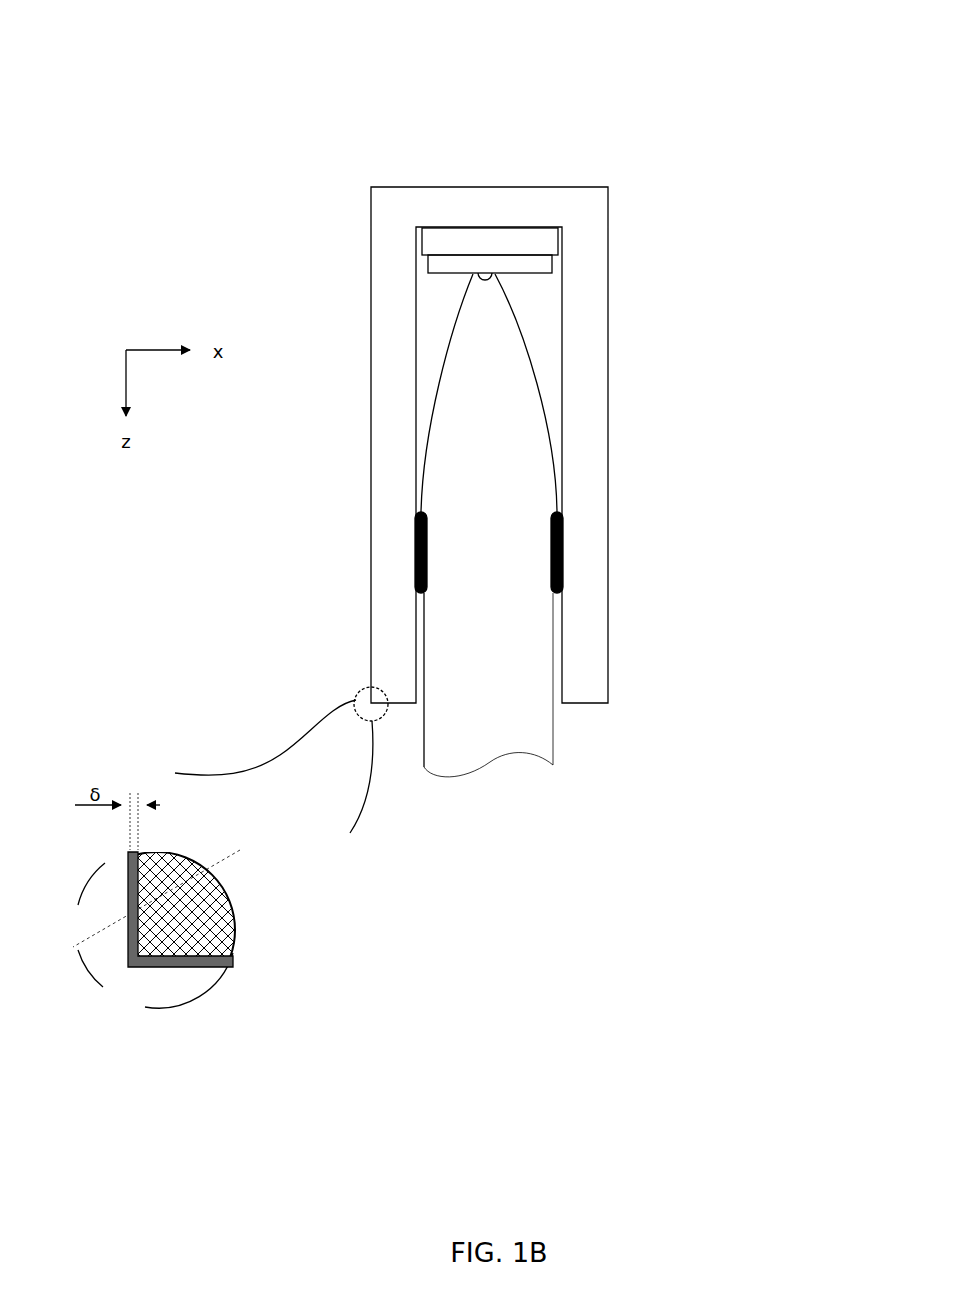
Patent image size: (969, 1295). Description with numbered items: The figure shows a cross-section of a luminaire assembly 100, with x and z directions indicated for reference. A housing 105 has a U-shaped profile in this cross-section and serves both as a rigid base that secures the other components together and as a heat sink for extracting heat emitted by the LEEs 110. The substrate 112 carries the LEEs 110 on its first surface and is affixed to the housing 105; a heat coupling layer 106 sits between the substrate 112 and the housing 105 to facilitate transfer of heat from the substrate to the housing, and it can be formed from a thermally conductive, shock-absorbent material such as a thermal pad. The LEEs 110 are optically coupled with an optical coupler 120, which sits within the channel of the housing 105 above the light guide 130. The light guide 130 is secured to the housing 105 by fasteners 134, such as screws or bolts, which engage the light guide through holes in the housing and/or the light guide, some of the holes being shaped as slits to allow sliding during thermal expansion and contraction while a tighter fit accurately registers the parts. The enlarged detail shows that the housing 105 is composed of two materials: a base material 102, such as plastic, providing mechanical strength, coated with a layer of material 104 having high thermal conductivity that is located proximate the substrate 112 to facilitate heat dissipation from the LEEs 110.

The luminaire assembly 100 is at (784, 47).
The base material 102 is at (190, 910).
The layer of material having high thermal conductivity 104 is at (240, 937).
The housing 105 is at (387, 292).
The heat coupling layer 106 is at (533, 240).
The LEEs 110 is at (500, 276).
The substrate 112 is at (548, 267).
The optical coupler 120 is at (517, 358).
The light guide 130 is at (533, 635).
The fasteners 134 is at (552, 531).